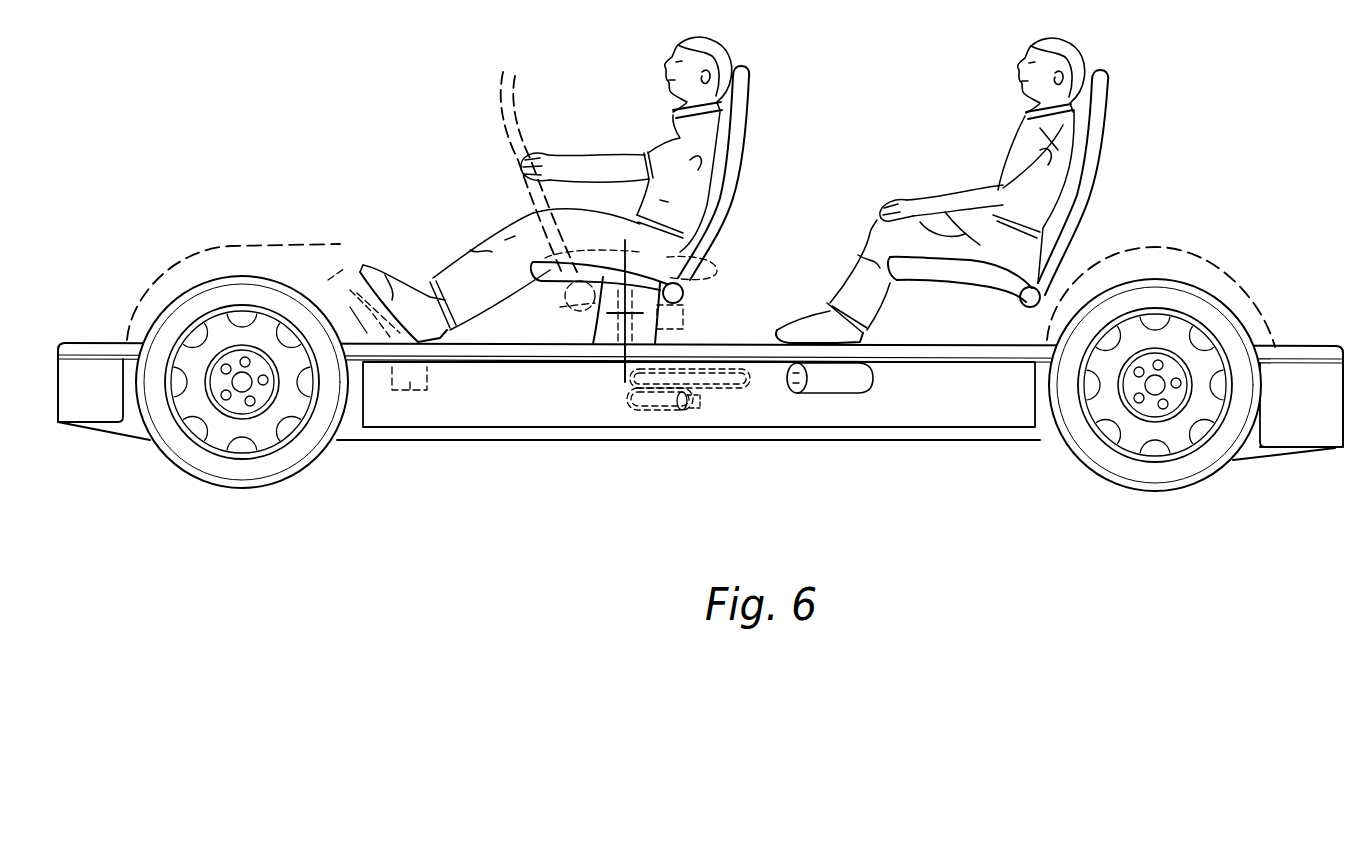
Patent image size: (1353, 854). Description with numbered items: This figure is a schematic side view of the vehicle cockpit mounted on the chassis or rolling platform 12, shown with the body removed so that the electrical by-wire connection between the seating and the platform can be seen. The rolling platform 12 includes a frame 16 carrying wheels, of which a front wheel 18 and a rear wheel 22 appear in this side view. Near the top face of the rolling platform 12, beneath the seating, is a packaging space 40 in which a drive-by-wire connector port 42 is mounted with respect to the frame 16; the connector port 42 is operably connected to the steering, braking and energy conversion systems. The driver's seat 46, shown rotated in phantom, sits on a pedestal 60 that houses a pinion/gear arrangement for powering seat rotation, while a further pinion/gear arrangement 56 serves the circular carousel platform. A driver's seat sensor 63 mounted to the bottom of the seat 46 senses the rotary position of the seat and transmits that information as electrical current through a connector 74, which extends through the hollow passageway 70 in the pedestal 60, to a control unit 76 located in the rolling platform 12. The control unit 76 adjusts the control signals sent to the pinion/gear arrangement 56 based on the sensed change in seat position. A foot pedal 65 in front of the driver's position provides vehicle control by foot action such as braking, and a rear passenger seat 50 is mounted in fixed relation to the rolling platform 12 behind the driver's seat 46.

The chassis or rolling platform 12 is at (962, 398).
The frame 16 is at (913, 440).
The wheel 18 is at (197, 475).
The wheel 22 is at (1190, 475).
The packaging space 40 is at (556, 412).
The drive-by-wire connector port 42 is at (810, 385).
The driver's seat 46 is at (740, 105).
The rear passenger seat 50 is at (1100, 105).
The pinion/gear arrangement 56 is at (412, 392).
The pedestal 60 is at (603, 330).
The driver's seat sensor 63 is at (683, 318).
The foot pedal 65 is at (337, 262).
The passageway 70 is at (565, 303).
The connector 74 is at (627, 410).
The control unit 76 is at (858, 390).